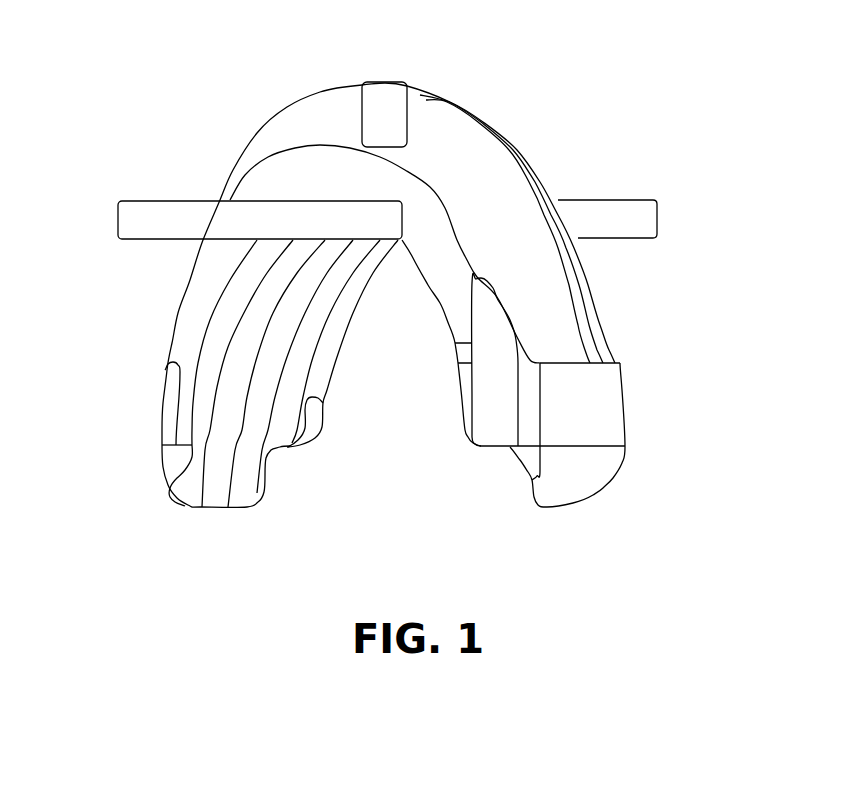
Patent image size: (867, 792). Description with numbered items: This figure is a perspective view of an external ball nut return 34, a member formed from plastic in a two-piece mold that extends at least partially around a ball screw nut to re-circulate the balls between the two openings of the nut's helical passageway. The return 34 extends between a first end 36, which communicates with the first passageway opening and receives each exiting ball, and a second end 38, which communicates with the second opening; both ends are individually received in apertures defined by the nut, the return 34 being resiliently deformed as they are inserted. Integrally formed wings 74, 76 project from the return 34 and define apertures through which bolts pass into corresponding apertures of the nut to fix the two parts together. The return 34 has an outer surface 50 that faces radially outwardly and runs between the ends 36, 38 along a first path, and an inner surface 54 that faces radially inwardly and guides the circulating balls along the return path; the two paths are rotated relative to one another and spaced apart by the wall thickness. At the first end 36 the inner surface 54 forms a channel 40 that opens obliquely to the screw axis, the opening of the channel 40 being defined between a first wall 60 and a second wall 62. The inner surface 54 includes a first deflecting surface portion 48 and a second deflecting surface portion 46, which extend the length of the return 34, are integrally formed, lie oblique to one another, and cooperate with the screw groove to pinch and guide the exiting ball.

The external ball nut return 34 is at (245, 48).
The outer surface 50 is at (297, 130).
The wing 76 is at (165, 202).
The wing 74 is at (625, 200).
The first wall 60 is at (183, 347).
The second wall 62 is at (325, 358).
The first end 36 is at (165, 480).
The second end 38 is at (603, 488).
The second deflecting surface portion 46 is at (187, 482).
The first deflecting surface portion 48 is at (255, 473).
The channel 40 is at (212, 483).
The inner surface 54 is at (343, 482).